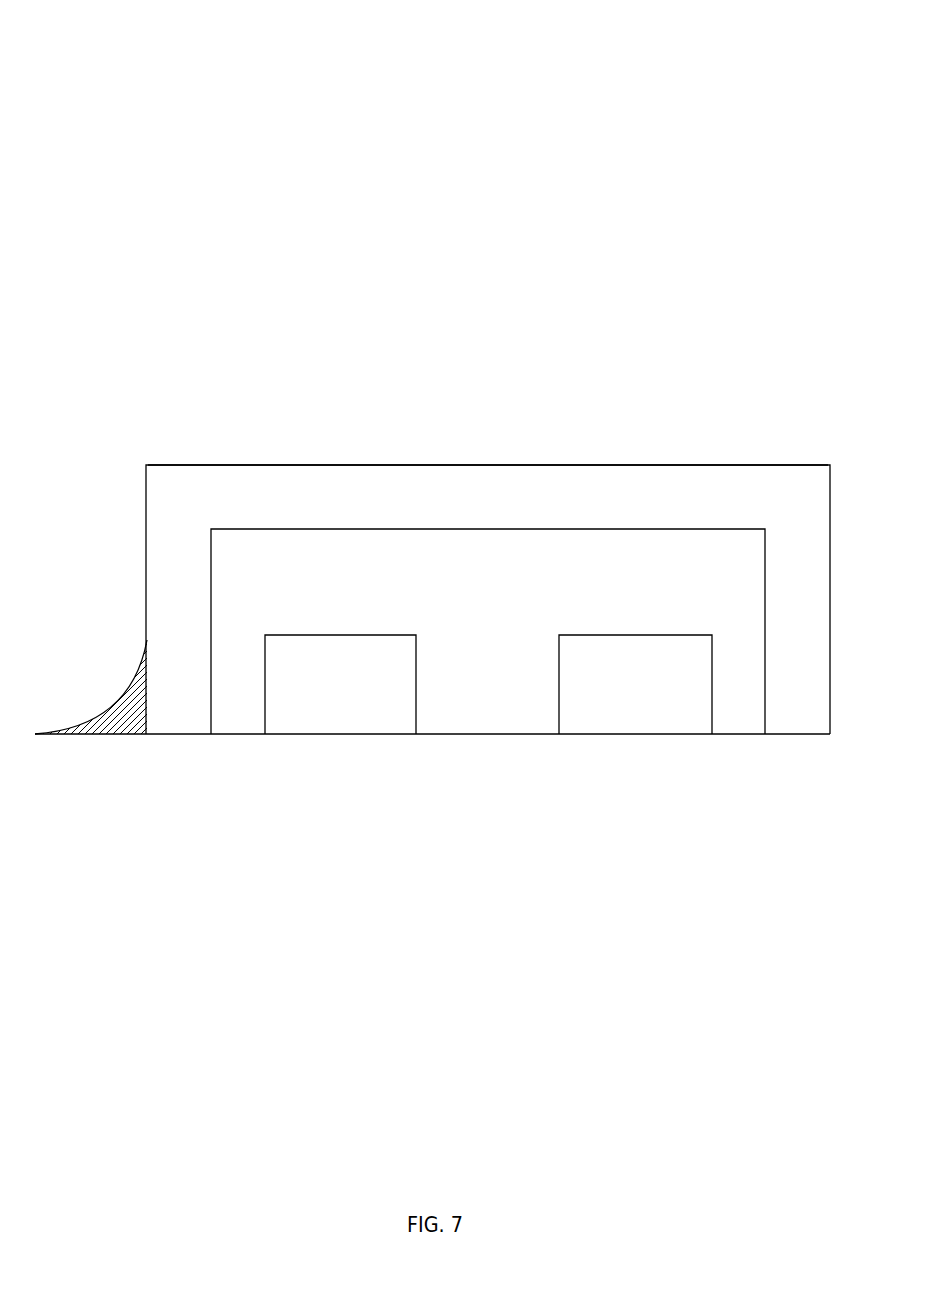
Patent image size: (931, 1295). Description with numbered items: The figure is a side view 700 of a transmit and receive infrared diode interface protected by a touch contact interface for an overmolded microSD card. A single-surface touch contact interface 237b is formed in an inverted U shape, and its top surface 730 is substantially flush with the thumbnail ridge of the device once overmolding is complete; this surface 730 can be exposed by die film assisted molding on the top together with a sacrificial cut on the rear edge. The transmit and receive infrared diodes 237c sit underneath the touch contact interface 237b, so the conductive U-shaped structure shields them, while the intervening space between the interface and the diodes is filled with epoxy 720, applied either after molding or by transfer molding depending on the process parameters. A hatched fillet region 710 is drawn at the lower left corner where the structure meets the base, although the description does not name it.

The side view 700 is at (110, 40).
The touch contact interface 237b is at (206, 503).
The surface 730 is at (693, 465).
The epoxy 720 is at (512, 569).
The Tx/Rx IrDA diode interface 237c is at (637, 718).
The fillet 710 is at (122, 718).